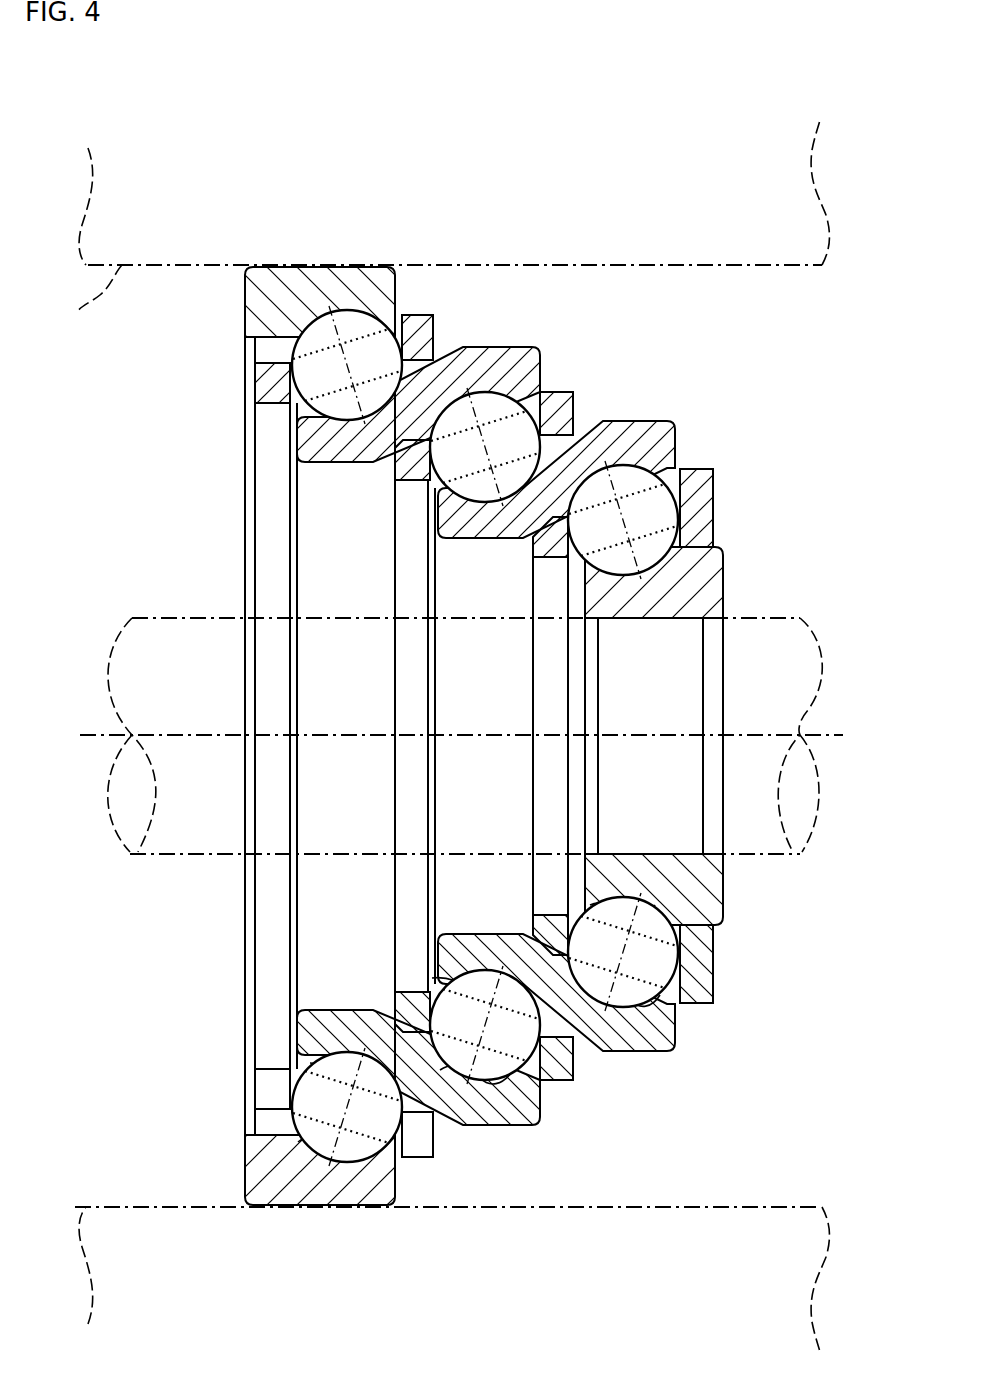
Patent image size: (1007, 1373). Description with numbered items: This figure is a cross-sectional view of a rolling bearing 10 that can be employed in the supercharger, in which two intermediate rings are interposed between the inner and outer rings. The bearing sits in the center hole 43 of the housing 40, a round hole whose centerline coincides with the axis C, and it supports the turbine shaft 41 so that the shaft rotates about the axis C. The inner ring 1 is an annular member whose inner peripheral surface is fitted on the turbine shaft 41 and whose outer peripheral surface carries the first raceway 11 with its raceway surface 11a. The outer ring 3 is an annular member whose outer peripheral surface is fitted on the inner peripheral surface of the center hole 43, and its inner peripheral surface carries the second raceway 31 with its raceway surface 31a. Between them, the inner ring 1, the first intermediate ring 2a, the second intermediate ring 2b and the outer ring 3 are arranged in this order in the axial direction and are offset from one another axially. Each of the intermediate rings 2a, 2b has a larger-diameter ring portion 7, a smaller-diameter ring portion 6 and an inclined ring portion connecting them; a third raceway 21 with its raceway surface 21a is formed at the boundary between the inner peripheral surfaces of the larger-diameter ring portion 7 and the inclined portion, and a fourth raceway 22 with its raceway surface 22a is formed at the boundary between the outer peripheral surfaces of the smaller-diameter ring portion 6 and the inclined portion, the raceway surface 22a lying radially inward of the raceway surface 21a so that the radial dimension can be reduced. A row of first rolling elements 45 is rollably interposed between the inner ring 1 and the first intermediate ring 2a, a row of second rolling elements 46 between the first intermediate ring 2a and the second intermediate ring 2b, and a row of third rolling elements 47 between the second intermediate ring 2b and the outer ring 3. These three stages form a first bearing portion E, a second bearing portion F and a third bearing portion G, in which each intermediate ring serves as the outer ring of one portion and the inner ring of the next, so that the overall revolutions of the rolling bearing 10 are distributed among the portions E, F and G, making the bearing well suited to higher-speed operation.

The inner ring 1 is at (707, 736).
The first intermediate ring 2a is at (692, 448).
The second intermediate ring 2b is at (287, 441).
The outer ring 3 is at (330, 736).
The smaller-diameter ring portion 6 is at (475, 468).
The larger-diameter ring portion 7 is at (475, 445).
The rolling bearing 10 is at (520, 727).
The first raceway 11 is at (676, 935).
The raceway surface 11a is at (712, 893).
The third raceway 21 is at (596, 1044).
The raceway surface of the third raceway 21a is at (630, 995).
The fourth raceway 22 is at (357, 1053).
The raceway surface of the fourth raceway 22a is at (432, 978).
The second raceway 31 is at (300, 1132).
The raceway surface 31a is at (376, 1158).
The housing 40 is at (443, 235).
The turbine shaft 41 is at (160, 618).
The center hole 43 is at (158, 929).
The first rolling elements 45 is at (700, 540).
The second rolling elements 46 is at (369, 477).
The third rolling elements 47 is at (412, 716).
The axis C is at (802, 735).
The first bearing portion E is at (695, 736).
The second bearing portion F is at (355, 458).
The third bearing portion G is at (475, 432).